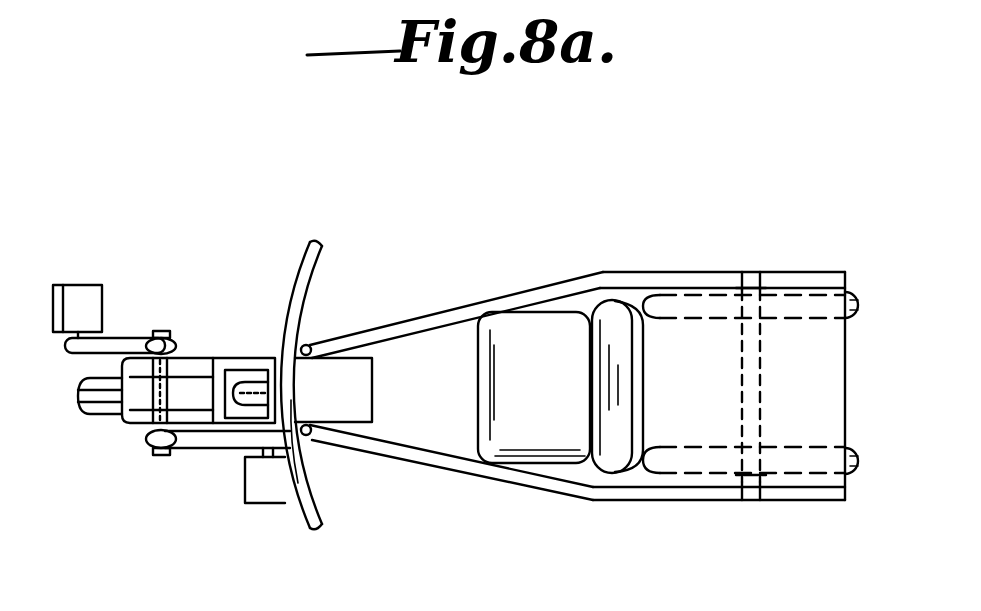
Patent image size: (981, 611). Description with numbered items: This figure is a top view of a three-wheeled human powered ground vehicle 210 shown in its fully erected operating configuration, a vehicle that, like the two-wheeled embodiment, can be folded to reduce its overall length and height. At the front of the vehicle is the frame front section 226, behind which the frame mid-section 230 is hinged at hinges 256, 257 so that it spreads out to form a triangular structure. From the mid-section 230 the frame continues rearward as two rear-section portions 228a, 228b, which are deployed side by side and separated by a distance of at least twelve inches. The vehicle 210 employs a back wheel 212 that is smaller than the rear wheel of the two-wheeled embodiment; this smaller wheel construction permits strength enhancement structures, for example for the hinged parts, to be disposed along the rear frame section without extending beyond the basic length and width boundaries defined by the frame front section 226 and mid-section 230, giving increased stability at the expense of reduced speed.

The three-wheeled human powered ground vehicle 210 is at (595, 245).
The back wheel 212 is at (790, 295).
The frame front section 226 is at (130, 331).
The rear-section portion 228a is at (710, 271).
The rear-section portion 228b is at (667, 501).
The frame mid-section 230 is at (487, 301).
The hinge 256 is at (309, 346).
The hinge 257 is at (310, 436).